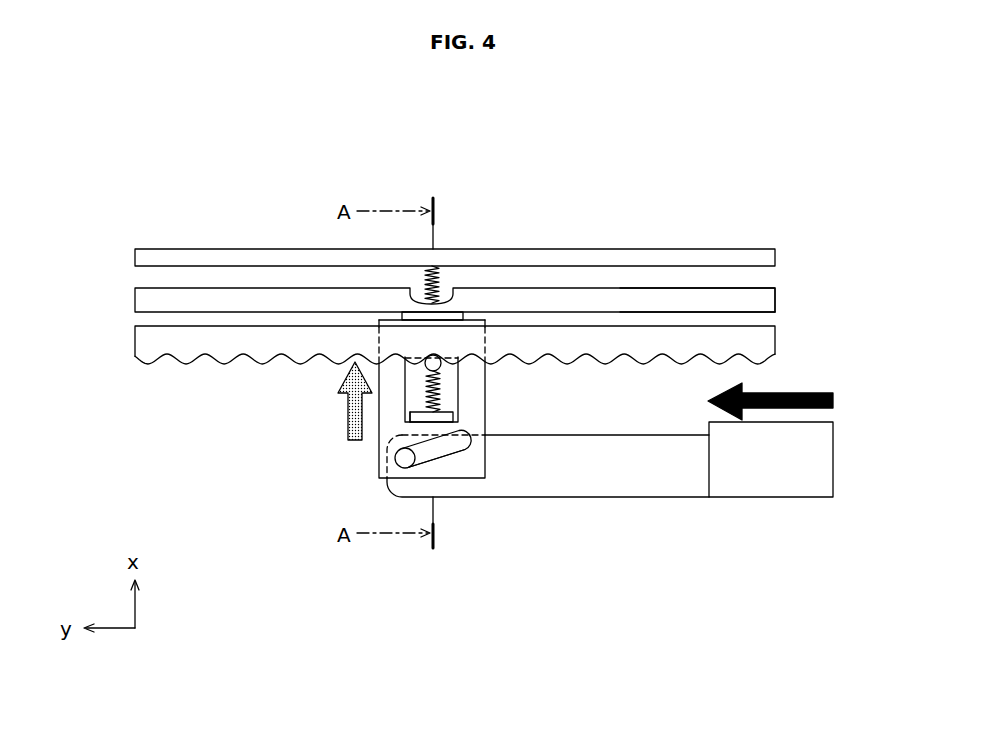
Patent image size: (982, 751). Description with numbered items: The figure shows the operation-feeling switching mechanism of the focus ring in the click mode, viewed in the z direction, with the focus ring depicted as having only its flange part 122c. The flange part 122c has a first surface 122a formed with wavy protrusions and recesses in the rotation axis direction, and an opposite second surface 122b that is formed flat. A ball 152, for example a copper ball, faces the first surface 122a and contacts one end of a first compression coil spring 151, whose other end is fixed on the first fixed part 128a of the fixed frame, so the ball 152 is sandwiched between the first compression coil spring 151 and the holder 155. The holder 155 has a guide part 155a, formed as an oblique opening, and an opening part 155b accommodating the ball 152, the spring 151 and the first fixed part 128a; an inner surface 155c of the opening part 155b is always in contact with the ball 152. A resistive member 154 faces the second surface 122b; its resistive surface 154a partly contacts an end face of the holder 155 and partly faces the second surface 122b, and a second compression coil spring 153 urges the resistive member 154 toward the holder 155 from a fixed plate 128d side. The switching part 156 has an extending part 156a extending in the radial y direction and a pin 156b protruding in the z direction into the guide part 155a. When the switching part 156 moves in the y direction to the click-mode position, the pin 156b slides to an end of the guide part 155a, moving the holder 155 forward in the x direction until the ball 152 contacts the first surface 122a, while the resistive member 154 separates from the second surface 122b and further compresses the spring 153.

The first surface 122a is at (167, 356).
The second surface 122b is at (157, 326).
The flange part 122c is at (135, 338).
The first fixed part 128a is at (411, 418).
The top plate 128d is at (135, 257).
The first compression coil spring 151 is at (442, 384).
The ball 152 is at (442, 360).
The second compression coil spring 153 is at (440, 279).
The resistive member 154 is at (777, 298).
The resistive surface 154a is at (755, 314).
The holder 155 is at (485, 420).
The guide part 155a is at (453, 450).
The opening part 155b is at (456, 395).
The inner surface 155c is at (433, 354).
The switching part 156 is at (822, 460).
The extending part 156a is at (636, 500).
The pin 156b is at (405, 458).